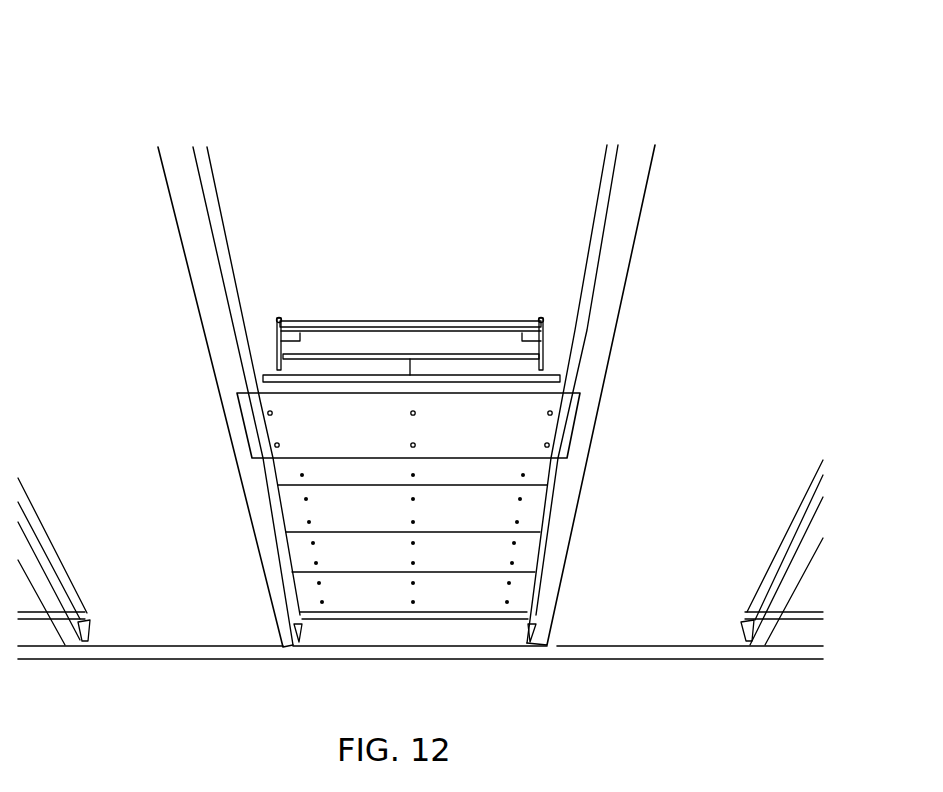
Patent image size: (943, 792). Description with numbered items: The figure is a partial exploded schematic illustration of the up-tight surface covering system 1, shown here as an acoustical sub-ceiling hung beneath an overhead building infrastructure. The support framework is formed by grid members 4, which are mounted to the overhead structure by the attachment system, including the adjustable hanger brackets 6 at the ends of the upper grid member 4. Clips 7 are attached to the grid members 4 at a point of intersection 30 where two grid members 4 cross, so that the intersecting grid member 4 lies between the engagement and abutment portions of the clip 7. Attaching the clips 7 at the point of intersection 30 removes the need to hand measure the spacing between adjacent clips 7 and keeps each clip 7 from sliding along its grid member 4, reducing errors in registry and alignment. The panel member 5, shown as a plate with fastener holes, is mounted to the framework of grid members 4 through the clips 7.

The surface covering system 1 is at (432, 159).
The grid member 4 is at (282, 347).
The panel member 5 is at (572, 430).
The adjustable hanger bracket 6 is at (300, 342).
The clip 7 is at (277, 318).
The point of intersection 30 is at (282, 322).